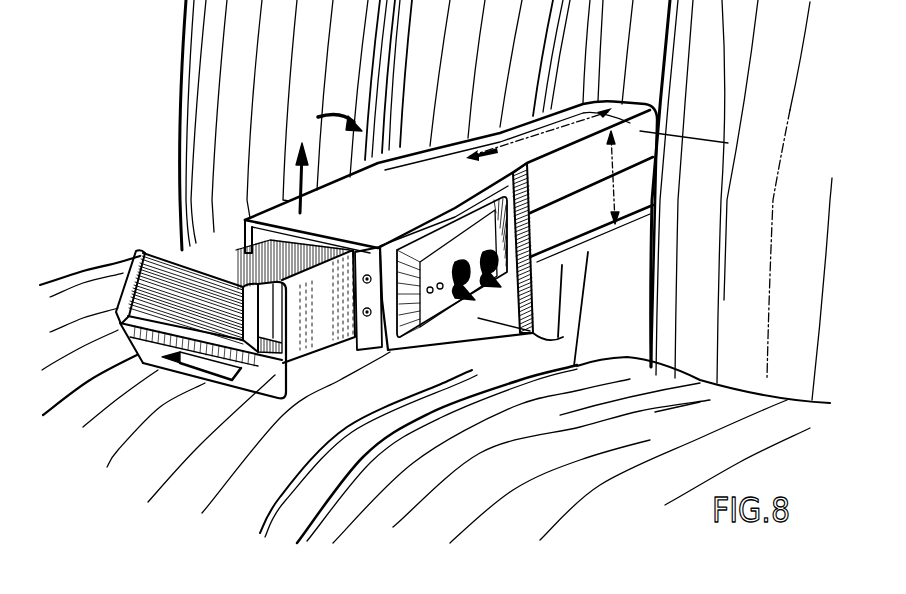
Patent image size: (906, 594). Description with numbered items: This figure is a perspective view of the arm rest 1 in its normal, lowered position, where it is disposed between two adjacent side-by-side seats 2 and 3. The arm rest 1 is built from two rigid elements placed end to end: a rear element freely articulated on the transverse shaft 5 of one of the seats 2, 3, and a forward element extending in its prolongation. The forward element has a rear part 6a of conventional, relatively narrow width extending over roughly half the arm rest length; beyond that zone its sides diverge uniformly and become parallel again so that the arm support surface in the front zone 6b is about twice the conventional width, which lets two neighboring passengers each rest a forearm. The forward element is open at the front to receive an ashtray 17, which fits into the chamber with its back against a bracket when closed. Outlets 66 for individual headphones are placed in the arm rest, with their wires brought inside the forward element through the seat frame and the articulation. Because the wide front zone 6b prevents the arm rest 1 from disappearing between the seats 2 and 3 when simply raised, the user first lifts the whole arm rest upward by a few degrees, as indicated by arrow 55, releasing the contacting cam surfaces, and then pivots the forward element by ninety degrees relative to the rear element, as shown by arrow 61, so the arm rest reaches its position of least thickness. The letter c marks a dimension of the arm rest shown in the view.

The arm rest 1 is at (453, 141).
The seat 2 is at (463, 63).
The seat 3 is at (816, 151).
The transverse shaft 5 is at (710, 138).
The rear part of forward element 6a is at (553, 139).
The front zone of forward element 6b is at (400, 204).
The ashtray 17 is at (320, 330).
The arrow 55 is at (298, 183).
The arrow 61 is at (343, 112).
The outlets 66 is at (492, 290).
The height dimension c is at (628, 161).